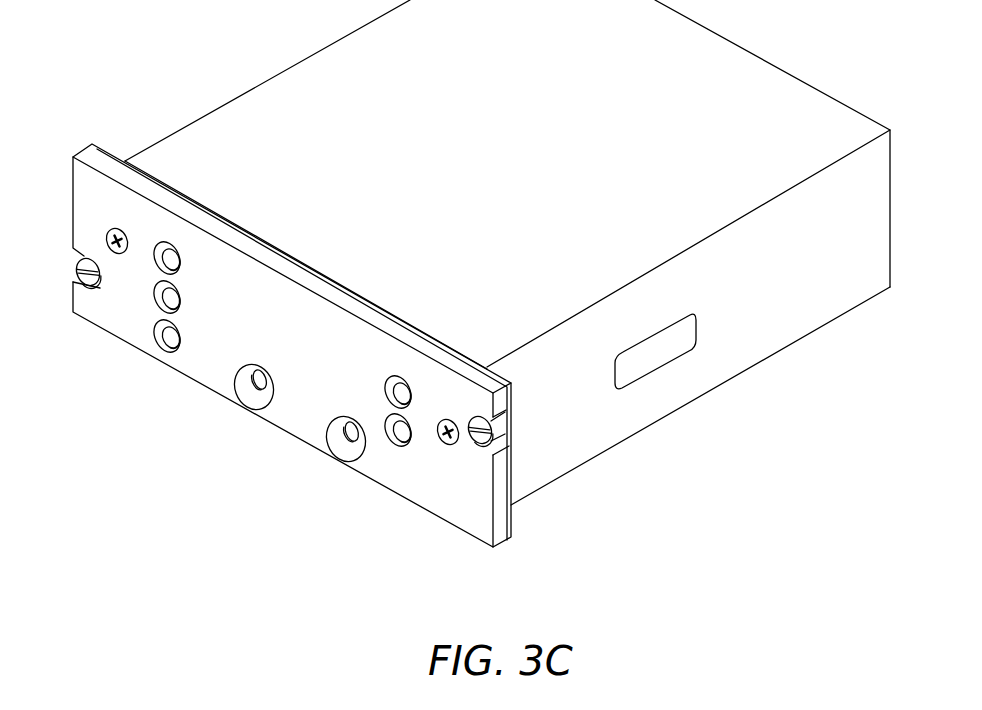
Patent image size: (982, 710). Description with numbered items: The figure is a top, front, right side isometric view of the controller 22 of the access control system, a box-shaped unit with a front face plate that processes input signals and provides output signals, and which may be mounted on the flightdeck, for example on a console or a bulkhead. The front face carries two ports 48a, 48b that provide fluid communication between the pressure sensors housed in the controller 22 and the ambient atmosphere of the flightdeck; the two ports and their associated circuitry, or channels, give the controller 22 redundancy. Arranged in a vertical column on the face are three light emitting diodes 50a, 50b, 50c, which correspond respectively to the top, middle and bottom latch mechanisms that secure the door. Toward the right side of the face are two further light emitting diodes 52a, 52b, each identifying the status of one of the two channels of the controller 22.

The controller 22 is at (303, 85).
The port 48a is at (237, 397).
The port 48b is at (330, 450).
The light emitting diode 50a is at (176, 253).
The light emitting diode 50b is at (159, 296).
The light emitting diode 50c is at (160, 343).
The light emitting diode 52a is at (406, 387).
The light emitting diode 52b is at (401, 447).